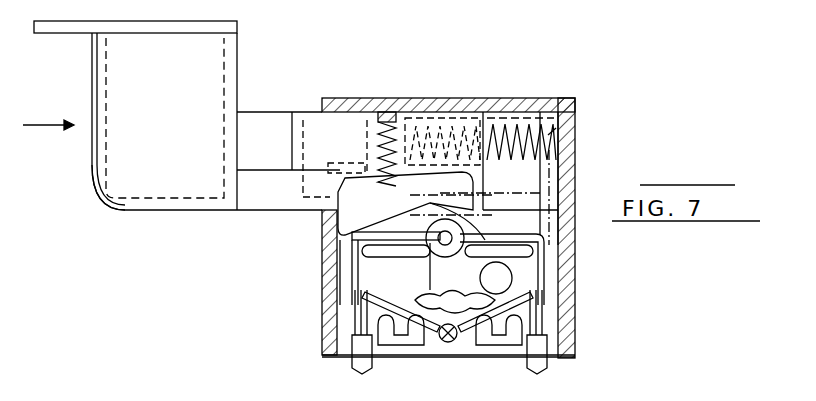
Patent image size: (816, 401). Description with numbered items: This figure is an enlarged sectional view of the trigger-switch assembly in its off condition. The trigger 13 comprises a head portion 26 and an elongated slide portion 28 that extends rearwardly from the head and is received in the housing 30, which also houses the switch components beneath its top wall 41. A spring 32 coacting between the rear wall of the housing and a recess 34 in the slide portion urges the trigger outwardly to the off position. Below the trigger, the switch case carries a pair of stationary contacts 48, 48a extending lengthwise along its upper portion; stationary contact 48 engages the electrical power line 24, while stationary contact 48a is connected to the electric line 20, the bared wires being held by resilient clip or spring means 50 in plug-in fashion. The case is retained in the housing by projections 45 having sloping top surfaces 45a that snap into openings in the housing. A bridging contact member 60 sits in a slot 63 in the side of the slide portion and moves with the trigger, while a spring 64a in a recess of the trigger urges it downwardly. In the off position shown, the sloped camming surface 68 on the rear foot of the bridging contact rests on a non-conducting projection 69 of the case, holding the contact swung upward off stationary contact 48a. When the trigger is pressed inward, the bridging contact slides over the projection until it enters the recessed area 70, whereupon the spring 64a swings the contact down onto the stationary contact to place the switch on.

The trigger 13 is at (100, 198).
The electric line 20 is at (352, 366).
The electrical power line 24 is at (548, 368).
The head portion 26 is at (237, 52).
The slide portion 28 is at (300, 112).
The housing 30 is at (577, 143).
The spring 32 is at (548, 135).
The recess 34 is at (412, 125).
The top wall 41 is at (506, 98).
The projections 45 is at (453, 345).
The sloping top surfaces 45a is at (440, 342).
The stationary contact 48 is at (352, 238).
The stationary contact 48a is at (545, 258).
The resilient clip or spring means 50 is at (418, 300).
The bridging contact member 60 is at (340, 215).
The slot 63 is at (352, 175).
The spring 64a is at (386, 125).
The sloped camming surface 68 is at (445, 249).
The abutment or projection 69 is at (478, 222).
The recessed area 70 is at (396, 267).